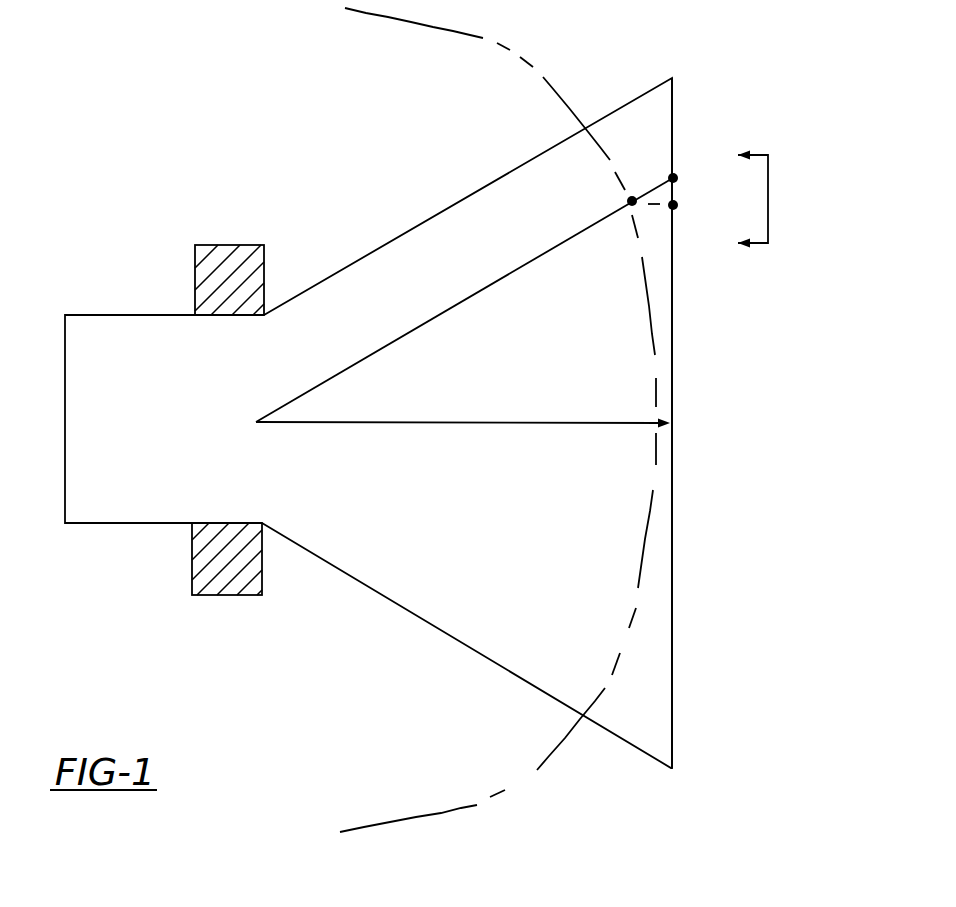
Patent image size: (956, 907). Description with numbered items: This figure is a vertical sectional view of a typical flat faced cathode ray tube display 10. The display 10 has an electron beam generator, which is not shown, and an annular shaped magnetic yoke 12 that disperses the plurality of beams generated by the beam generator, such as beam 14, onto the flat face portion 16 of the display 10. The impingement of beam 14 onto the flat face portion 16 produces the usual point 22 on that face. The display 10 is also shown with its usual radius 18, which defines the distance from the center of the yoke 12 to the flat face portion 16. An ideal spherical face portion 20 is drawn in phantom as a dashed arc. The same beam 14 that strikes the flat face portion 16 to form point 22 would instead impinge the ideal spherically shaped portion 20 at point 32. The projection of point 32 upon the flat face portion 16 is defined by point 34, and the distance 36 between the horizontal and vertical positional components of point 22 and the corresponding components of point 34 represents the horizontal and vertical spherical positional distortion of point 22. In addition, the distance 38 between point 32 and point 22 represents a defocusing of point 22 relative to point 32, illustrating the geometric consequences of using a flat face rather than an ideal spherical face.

The flat faced cathode ray tube display 10 is at (746, 81).
The annular shaped magnetic yoke 12 is at (202, 278).
The beam 14 is at (465, 298).
The flat face portion 16 is at (672, 387).
The radius 18 is at (470, 422).
The ideal spherical face portion 20 is at (524, 789).
The point 22 is at (676, 181).
The point 32 is at (621, 210).
The point 34 is at (675, 209).
The distance 36 is at (768, 192).
The distance 38 is at (632, 182).